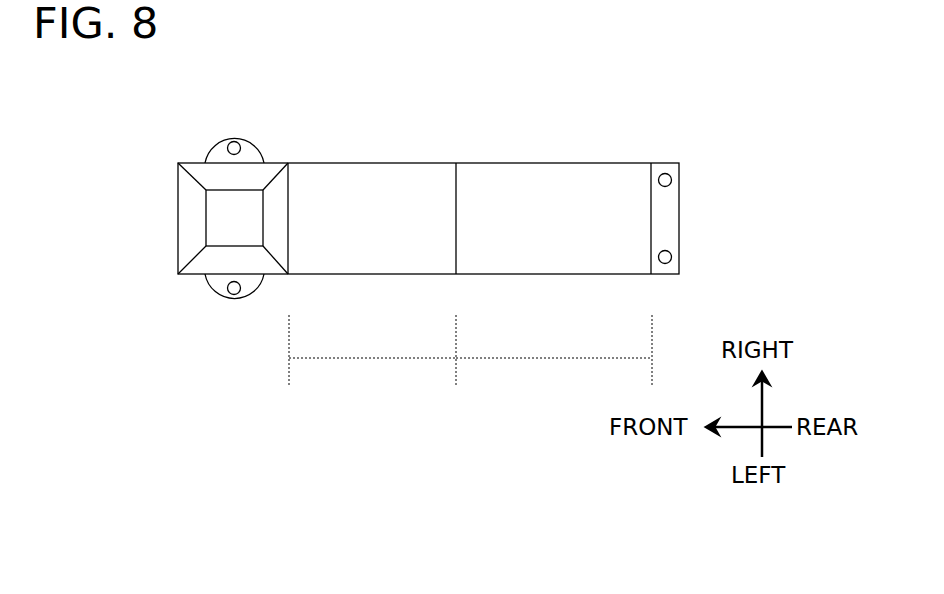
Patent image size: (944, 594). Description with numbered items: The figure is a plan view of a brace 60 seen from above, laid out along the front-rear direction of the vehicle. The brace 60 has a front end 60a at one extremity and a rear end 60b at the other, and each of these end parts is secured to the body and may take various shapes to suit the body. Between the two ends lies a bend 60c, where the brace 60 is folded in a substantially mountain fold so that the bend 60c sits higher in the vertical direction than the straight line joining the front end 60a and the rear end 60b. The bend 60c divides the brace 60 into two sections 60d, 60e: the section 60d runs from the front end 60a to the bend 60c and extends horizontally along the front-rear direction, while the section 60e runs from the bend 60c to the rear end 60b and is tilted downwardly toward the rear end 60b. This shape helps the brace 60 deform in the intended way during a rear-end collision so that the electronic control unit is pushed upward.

The brace 60 is at (428, 208).
The front end 60a is at (193, 228).
The rear end 60b is at (665, 228).
The bend 60c is at (456, 163).
The section 60d is at (448, 363).
The section 60e is at (644, 363).